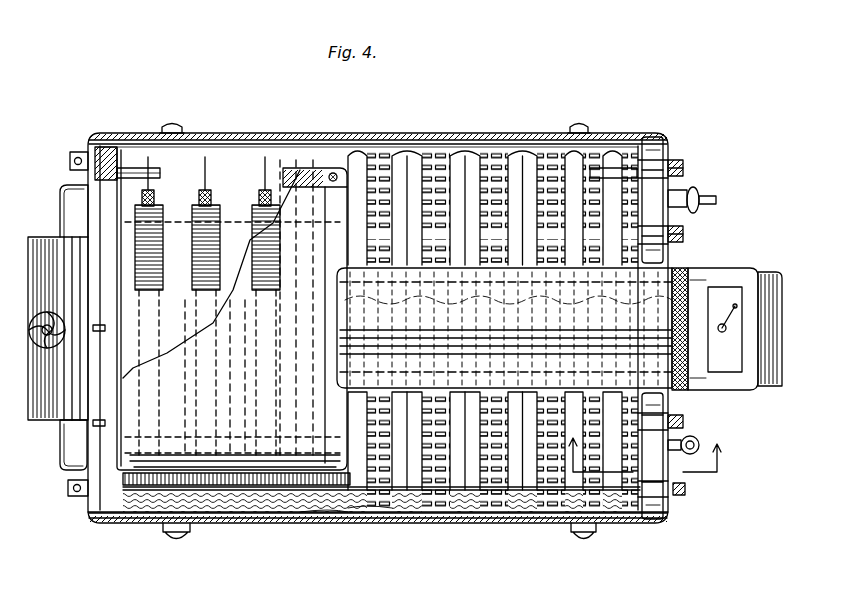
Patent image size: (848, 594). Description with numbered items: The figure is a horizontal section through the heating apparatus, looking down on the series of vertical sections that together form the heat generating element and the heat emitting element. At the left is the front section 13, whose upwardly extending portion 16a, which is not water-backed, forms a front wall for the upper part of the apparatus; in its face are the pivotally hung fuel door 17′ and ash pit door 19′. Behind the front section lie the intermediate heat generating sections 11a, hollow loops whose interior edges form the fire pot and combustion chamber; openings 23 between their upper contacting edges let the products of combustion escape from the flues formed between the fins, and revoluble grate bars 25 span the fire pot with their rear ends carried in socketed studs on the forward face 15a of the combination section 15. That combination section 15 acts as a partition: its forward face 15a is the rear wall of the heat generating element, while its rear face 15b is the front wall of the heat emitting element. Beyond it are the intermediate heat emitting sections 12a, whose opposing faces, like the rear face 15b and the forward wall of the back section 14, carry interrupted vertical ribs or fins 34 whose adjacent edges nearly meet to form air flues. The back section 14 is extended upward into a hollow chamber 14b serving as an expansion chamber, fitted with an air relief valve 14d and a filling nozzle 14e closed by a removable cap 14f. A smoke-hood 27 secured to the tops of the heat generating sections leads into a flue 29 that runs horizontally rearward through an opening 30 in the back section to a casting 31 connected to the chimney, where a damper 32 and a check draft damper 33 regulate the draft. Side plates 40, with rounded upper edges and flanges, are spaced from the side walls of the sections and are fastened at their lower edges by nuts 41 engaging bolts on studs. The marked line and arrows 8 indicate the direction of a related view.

The section line arrows 8 is at (652, 450).
The intermediate heat generating sections 11a is at (230, 153).
The intermediate heat emitting sections 12a is at (405, 155).
The front section 13 is at (88, 150).
The back section 14 is at (648, 135).
The hollow chamber 14b is at (677, 162).
The air relief valve 14d is at (695, 437).
The filling nozzle 14e is at (680, 198).
The removable cap 14f is at (716, 204).
The combination intermediate section 15 is at (362, 512).
The forward face of combination section 15a is at (330, 512).
The rear face of combination section 15b is at (370, 512).
The upwardly extending portion 16a is at (102, 152).
The fuel door 17′ is at (50, 405).
The ash pit door 19′ is at (67, 195).
The openings 23 is at (148, 200).
The revoluble grate bars 25 is at (147, 263).
The smoke-hood 27 is at (187, 458).
The flue 29 is at (504, 328).
The opening in the back 30 is at (674, 264).
The casting 31 is at (733, 268).
The damper 32 is at (740, 307).
The check draft damper 33 is at (778, 337).
The interrupted vertical ribs or fins 34 is at (385, 148).
The side plates 40 is at (323, 136).
The nuts 41 is at (162, 124).